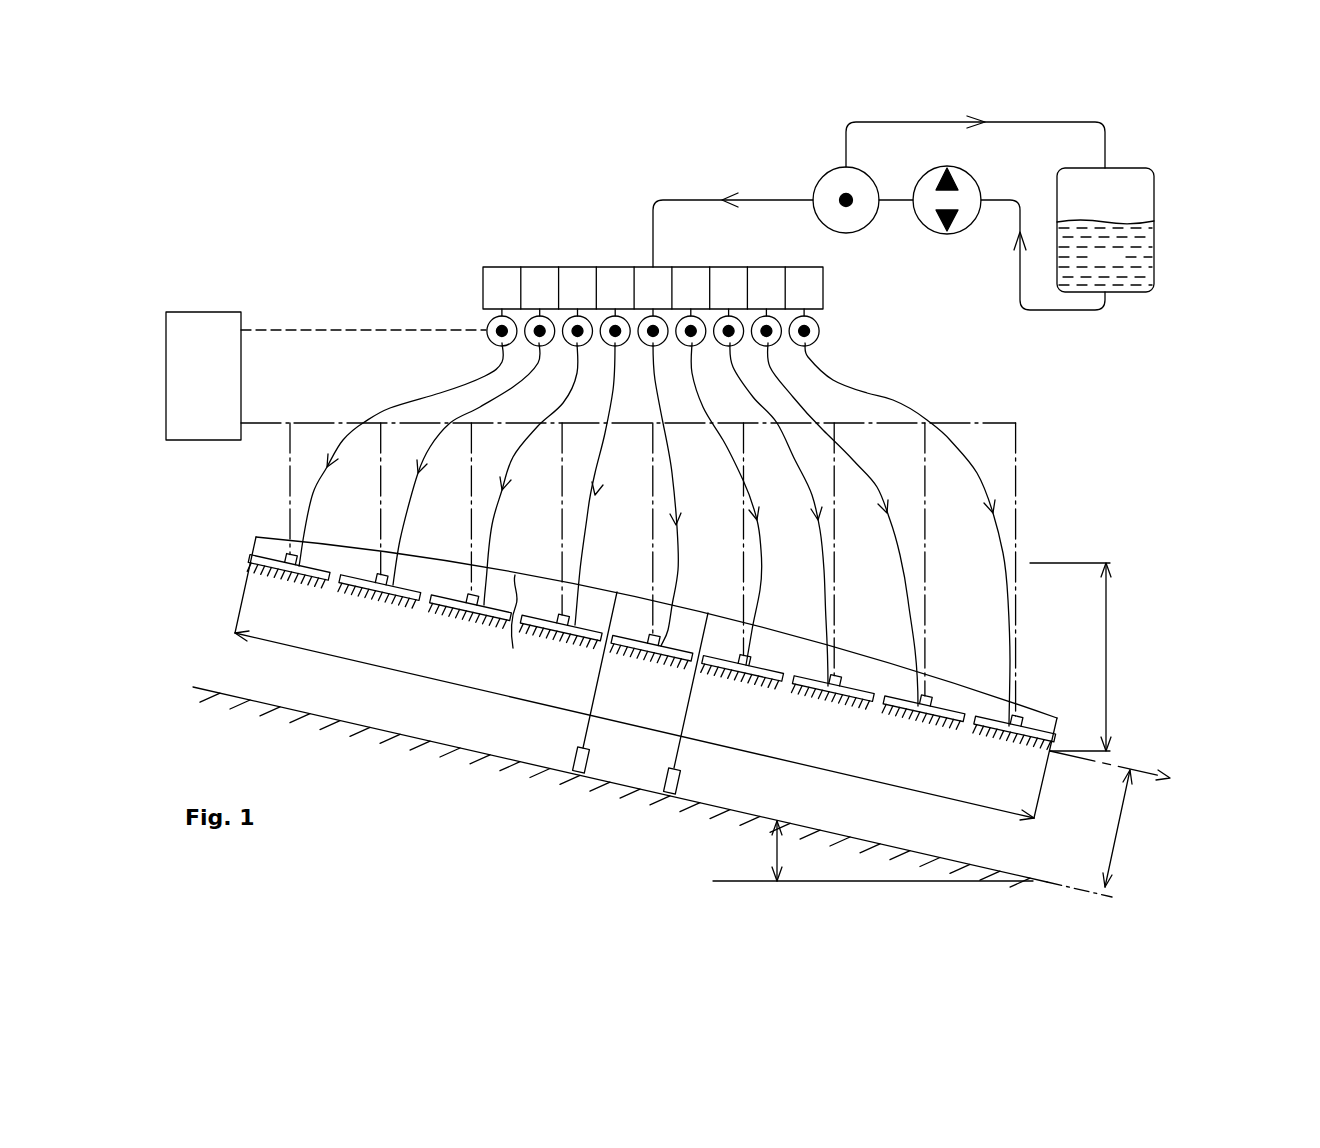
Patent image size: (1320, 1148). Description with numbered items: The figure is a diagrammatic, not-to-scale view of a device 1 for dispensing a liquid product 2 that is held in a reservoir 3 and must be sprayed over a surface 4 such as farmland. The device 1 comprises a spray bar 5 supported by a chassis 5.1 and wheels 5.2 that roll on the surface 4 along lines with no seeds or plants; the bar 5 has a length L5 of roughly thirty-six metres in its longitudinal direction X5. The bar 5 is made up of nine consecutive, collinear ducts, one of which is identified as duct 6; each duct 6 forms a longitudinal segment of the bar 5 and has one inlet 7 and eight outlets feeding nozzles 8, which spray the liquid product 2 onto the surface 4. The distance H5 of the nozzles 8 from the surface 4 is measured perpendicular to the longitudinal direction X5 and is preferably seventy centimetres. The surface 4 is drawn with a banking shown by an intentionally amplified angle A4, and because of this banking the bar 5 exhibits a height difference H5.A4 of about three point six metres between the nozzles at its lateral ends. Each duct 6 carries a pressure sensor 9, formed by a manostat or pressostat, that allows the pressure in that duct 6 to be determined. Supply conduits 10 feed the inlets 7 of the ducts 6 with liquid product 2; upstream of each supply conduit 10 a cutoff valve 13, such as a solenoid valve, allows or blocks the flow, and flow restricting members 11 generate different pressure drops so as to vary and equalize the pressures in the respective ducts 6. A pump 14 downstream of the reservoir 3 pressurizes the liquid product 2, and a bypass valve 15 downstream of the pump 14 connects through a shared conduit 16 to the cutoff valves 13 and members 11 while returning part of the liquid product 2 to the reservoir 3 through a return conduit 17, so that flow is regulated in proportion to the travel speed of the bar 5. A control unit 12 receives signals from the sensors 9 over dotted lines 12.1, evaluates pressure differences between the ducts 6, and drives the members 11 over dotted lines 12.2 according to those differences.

The device 1 is at (212, 257).
The liquid product 2 is at (1105, 252).
The reservoir 3 is at (1154, 208).
The surface 4 is at (884, 845).
The bar 5 is at (228, 583).
The chassis 5.1 is at (597, 686).
The wheels 5.2 is at (574, 757).
The duct 6 is at (962, 730).
The inlet 7 is at (1000, 728).
The nozzles 8 is at (778, 692).
The pressure sensor 9 is at (376, 585).
The supply conduits 10 is at (440, 393).
The flow restricting members 11 is at (834, 316).
The control unit 12 is at (203, 376).
The dotted lines 12.1 is at (268, 425).
The dotted lines 12.2 is at (290, 330).
The cutoff valve 13 is at (834, 262).
The pump 14 is at (931, 234).
The bypass valve 15 is at (829, 166).
The shared conduit 16 is at (652, 233).
The return line 17 is at (1106, 148).
The length L5 is at (428, 678).
The distance H5 is at (1099, 833).
The angle A4 is at (873, 851).
The longitudinal direction X5 is at (1127, 771).
The height difference H5.A4 is at (1105, 657).